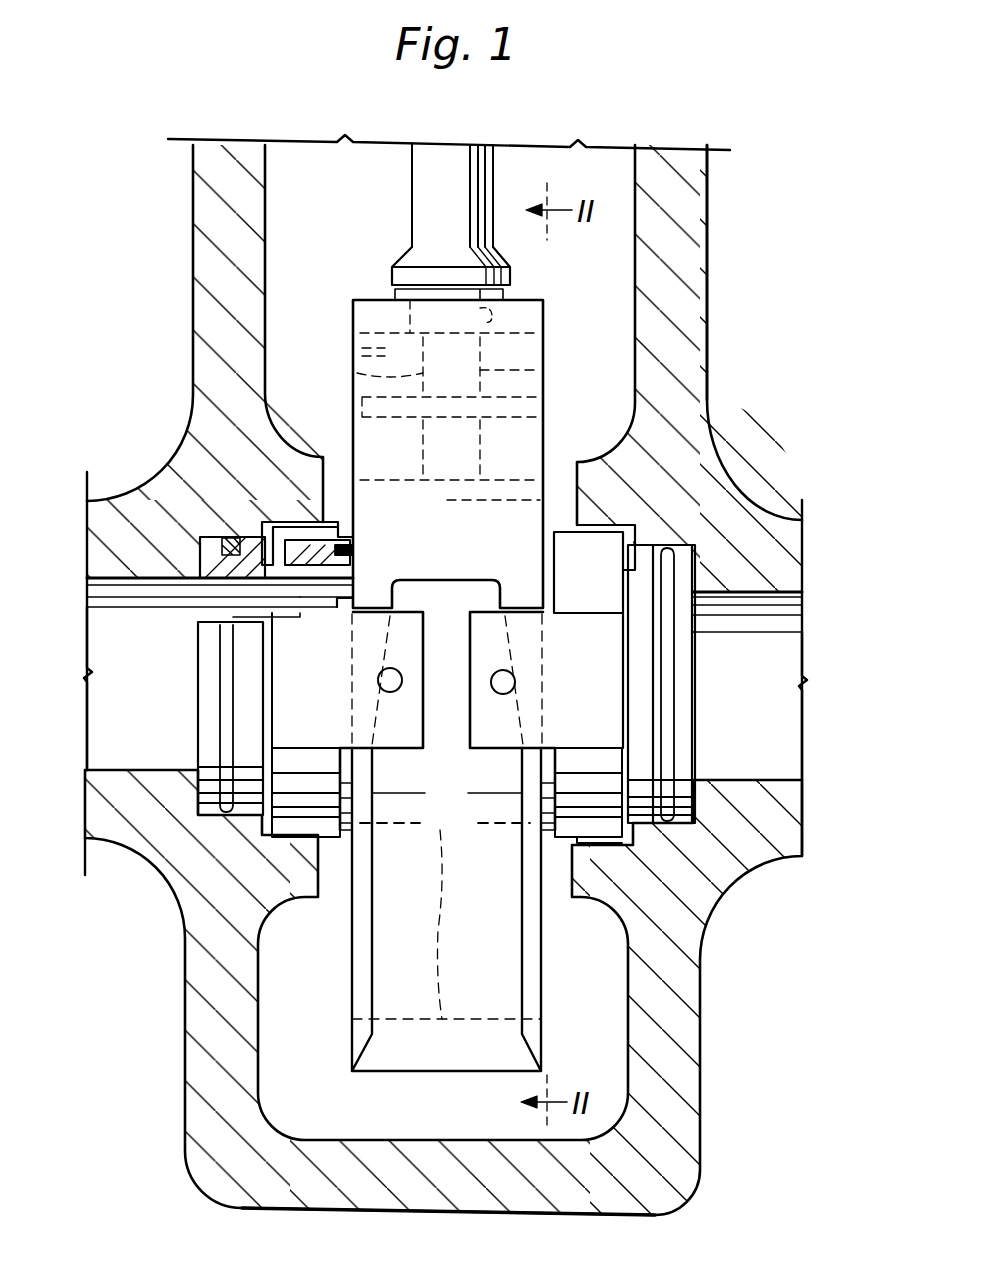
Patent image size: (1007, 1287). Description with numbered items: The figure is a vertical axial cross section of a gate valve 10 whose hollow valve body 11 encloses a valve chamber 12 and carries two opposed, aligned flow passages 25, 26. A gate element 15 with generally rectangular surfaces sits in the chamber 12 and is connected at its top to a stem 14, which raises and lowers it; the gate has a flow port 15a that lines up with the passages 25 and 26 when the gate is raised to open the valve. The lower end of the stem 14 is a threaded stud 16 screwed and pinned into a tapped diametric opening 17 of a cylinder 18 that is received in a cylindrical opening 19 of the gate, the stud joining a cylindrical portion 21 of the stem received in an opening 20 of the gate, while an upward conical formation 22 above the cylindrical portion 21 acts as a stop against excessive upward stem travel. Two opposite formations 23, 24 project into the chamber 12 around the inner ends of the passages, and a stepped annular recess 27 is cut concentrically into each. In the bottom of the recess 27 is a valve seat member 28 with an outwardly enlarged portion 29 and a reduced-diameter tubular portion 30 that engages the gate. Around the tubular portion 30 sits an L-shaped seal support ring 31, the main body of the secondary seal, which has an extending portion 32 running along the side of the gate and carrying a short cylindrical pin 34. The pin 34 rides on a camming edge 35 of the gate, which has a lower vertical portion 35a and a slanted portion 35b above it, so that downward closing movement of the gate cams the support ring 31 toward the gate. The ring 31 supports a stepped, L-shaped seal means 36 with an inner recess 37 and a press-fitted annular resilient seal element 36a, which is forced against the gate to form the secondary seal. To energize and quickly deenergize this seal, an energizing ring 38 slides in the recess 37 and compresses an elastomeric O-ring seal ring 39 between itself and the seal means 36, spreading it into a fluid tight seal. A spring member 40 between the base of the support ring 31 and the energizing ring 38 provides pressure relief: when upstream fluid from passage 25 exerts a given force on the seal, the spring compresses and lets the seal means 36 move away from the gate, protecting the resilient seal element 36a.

The gate valve 10 is at (713, 194).
The valve body 11 is at (707, 376).
The valve chamber 12 is at (632, 246).
The stem 14 is at (447, 150).
The gate element 15 is at (356, 300).
The flow port 15a is at (447, 909).
The threaded stud 16 is at (356, 373).
The tapped diametric opening 17 is at (545, 370).
The cylinder 18 is at (356, 430).
The cylindrical opening 19 is at (545, 346).
The opening 20 is at (540, 314).
The cylindrical portion 21 is at (400, 293).
The upward conical formation 22 is at (405, 254).
The formation 23 is at (340, 472).
The formation 24 is at (543, 464).
The flow passage 25 is at (100, 770).
The flow passage 26 is at (775, 778).
The stepped annular recess 27 is at (648, 560).
The valve seat member 28 is at (363, 592).
The outwardly enlarged portion 29 is at (230, 537).
The tubular portion 30 is at (322, 580).
The seal support ring 31 is at (345, 522).
The extending portion 32 is at (475, 748).
The cylindrical pin 34 is at (491, 682).
The camming edge 35 is at (447, 792).
The vertical portion 35a is at (445, 822).
The slanted portion 35b is at (500, 596).
The seal means 36 is at (345, 542).
The annular resilient seal element 36a is at (355, 553).
The inner recess 37 is at (305, 520).
The energizing ring 38 is at (292, 582).
The seal ring 39 is at (300, 580).
The spring member 40 is at (262, 537).